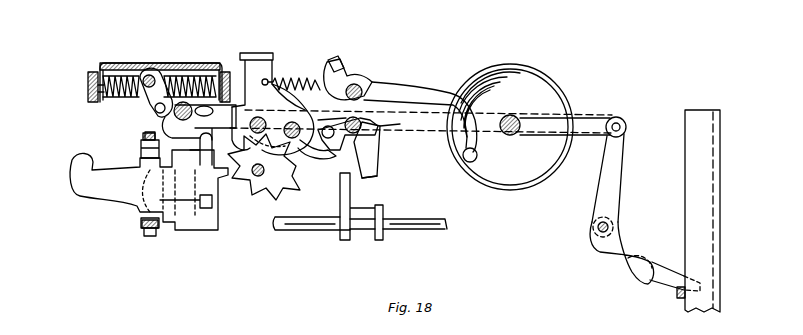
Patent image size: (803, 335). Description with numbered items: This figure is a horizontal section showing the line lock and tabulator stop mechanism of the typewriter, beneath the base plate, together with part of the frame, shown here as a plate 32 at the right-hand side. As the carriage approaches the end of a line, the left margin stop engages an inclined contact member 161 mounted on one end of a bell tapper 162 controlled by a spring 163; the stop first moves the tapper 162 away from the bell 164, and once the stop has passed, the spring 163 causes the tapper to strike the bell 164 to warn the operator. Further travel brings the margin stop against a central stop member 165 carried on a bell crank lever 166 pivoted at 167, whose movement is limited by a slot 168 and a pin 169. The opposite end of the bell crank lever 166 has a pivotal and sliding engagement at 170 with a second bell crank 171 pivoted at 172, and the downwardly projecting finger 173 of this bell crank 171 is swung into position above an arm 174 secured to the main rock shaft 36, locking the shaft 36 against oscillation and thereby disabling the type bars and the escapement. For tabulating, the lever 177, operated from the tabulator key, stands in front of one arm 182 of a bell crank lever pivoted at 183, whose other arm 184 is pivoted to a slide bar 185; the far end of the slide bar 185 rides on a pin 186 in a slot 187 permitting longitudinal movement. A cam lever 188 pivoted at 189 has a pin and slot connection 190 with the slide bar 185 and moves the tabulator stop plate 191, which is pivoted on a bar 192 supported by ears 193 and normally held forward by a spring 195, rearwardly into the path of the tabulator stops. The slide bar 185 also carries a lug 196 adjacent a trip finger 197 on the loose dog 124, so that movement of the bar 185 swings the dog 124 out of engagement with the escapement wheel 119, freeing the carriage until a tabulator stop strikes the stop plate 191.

The bar 32 is at (721, 156).
The main rock shaft 36 is at (320, 232).
The escapement wheel 119 is at (285, 188).
The movable dog 124 is at (172, 178).
The inclined contact member 161 is at (342, 64).
The bell tapper 162 is at (402, 86).
The spring 163 is at (284, 90).
The bell 164 is at (555, 90).
The central stop member 165 is at (262, 58).
The bell crank lever 166 is at (255, 60).
The pivot 167 is at (262, 108).
The slot 168 is at (294, 138).
The pin 169 is at (290, 140).
The pivotal and sliding engagement 170 is at (328, 124).
The second bell crank 171 is at (375, 150).
The pivot 172 is at (380, 126).
The downwardly projecting finger 173 is at (378, 168).
The arm 174 is at (385, 212).
The second lever 177 is at (676, 296).
The arm of bell crank lever 182 is at (670, 262).
The pivot 183 is at (610, 226).
The arm of bell crank lever 184 is at (620, 182).
The slide bar 185 is at (598, 124).
The pin 186 is at (165, 128).
The slot 187 is at (182, 75).
The cam lever 188 is at (155, 106).
The pivot 189 is at (149, 76).
The pin and slot connection 190 is at (174, 112).
The tabulator stop plate 191 is at (205, 70).
The bar 192 is at (96, 86).
The ears 193 is at (88, 76).
The spring 195 is at (106, 72).
The lug 196 is at (200, 145).
The trip finger 197 is at (141, 160).